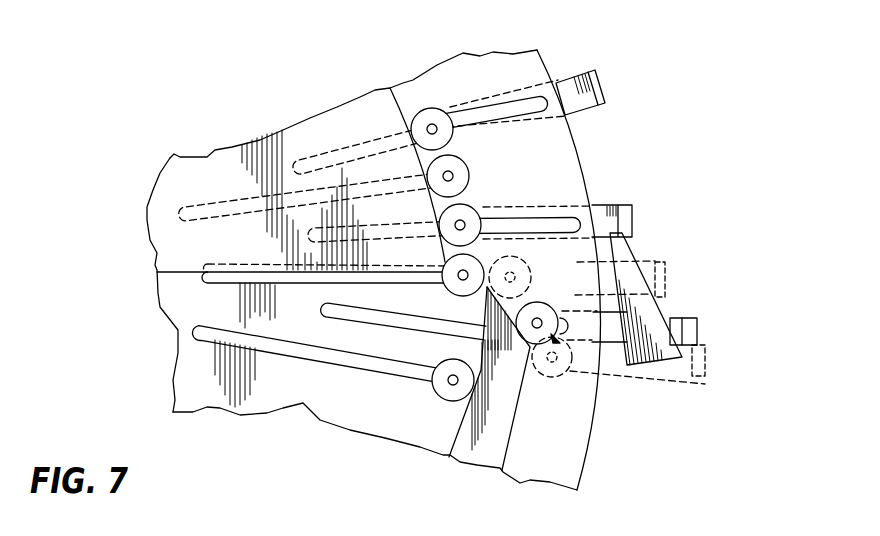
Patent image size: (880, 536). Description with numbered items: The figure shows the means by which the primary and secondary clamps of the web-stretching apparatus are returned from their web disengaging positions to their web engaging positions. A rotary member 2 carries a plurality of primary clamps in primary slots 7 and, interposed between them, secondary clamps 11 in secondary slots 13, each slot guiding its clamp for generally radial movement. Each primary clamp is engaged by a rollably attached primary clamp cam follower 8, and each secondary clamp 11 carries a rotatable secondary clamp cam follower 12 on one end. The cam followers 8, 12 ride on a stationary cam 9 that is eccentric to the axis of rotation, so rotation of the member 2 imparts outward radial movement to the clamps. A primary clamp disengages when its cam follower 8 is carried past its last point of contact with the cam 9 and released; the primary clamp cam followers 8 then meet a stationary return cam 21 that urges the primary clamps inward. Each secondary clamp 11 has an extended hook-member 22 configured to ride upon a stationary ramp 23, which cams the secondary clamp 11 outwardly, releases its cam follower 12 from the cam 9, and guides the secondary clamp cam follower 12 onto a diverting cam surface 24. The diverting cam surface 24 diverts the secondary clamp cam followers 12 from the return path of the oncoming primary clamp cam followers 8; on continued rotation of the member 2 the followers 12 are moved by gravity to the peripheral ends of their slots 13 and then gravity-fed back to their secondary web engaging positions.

The member 2 is at (556, 62).
The primary slot 7 is at (367, 368).
The primary clamp cam follower 8 is at (470, 168).
The cam 9 is at (313, 133).
The secondary clamp 11 is at (607, 73).
The secondary clamp cam follower 12 is at (432, 108).
The secondary slot 13 is at (425, 322).
The stationary return cam 21 is at (495, 438).
The extended hook-member 22 is at (577, 105).
The stationary ramp 23 is at (670, 308).
The diverting cam surface 24 is at (628, 247).